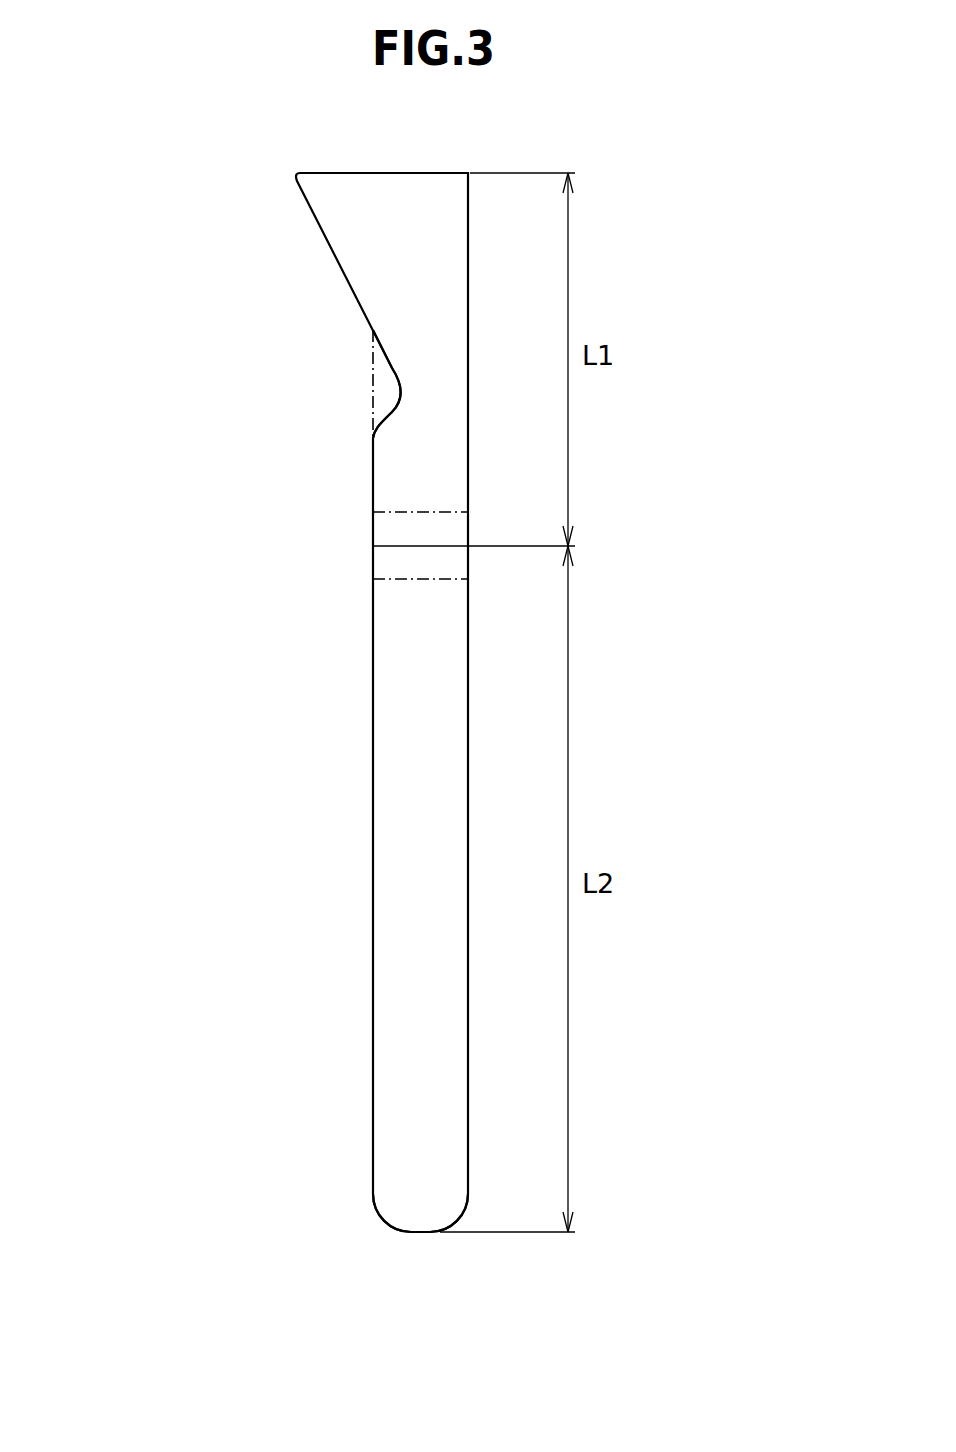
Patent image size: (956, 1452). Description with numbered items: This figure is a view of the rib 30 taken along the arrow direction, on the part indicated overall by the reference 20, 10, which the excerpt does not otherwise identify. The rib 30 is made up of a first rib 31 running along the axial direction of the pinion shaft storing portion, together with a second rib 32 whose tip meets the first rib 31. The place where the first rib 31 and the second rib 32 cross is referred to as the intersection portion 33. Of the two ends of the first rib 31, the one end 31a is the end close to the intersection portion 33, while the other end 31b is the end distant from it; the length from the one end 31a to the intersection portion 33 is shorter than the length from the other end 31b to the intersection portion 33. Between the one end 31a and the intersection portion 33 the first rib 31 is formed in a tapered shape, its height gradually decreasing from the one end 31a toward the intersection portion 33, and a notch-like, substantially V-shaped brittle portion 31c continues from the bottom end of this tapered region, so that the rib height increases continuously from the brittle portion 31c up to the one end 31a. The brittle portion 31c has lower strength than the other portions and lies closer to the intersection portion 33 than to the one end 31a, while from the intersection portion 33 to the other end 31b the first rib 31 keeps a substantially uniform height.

The terminal 20 is at (210, 155).
The connector 10 is at (370, 686).
The rib 30 is at (267, 630).
The first rib 31 is at (405, 737).
The one end 31a is at (390, 172).
The other end 31b is at (418, 1234).
The brittle portion 31c is at (402, 396).
The second rib 32 is at (413, 582).
The intersection portion 33 is at (373, 546).